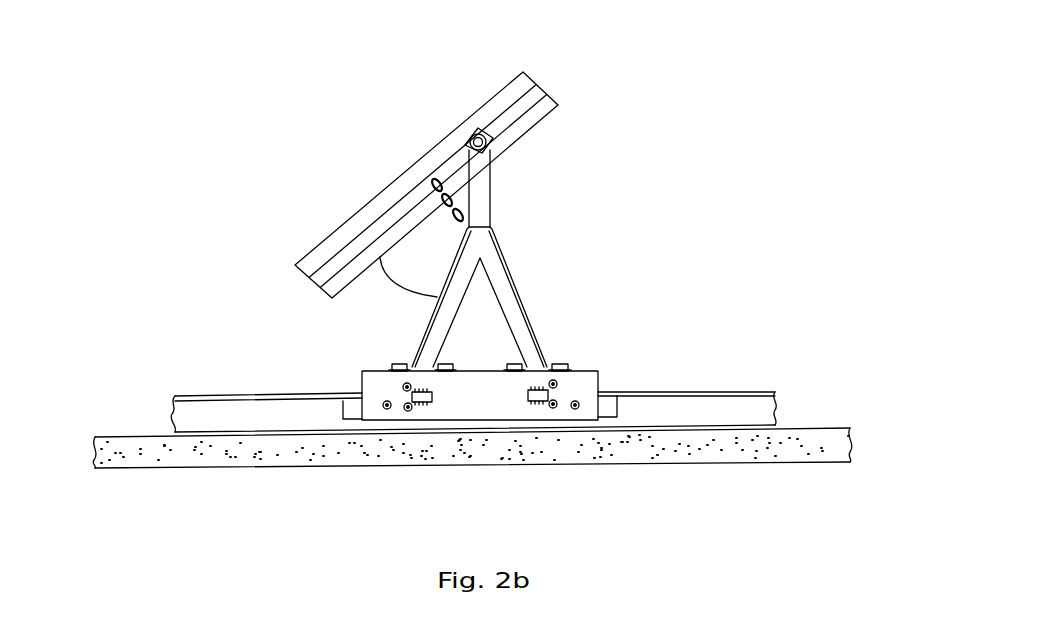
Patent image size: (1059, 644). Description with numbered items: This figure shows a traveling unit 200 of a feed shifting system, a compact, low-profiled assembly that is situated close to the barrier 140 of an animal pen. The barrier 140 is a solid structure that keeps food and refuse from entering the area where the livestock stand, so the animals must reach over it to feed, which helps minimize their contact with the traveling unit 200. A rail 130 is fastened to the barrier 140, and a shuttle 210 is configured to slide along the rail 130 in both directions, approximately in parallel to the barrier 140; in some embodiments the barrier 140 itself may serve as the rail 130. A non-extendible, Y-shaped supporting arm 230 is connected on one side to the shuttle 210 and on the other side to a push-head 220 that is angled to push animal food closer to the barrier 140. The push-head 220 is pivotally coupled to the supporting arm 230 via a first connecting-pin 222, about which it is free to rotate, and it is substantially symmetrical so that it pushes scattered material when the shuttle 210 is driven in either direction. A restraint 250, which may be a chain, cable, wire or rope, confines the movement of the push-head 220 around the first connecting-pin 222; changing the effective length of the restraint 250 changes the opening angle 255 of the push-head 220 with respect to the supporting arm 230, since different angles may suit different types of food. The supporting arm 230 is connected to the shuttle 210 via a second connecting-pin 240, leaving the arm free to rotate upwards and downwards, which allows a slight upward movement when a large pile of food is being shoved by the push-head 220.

The traveling unit 200 is at (238, 249).
The push-head 220 is at (525, 118).
The first connecting-pin 222 is at (464, 140).
The supporting arm 230 is at (505, 258).
The second connecting-pin 240 is at (458, 366).
The restraint 250 is at (433, 198).
The opening angle 255 is at (395, 284).
The shuttle 210 is at (527, 420).
The rail 130 is at (660, 392).
The barrier 140 is at (150, 436).